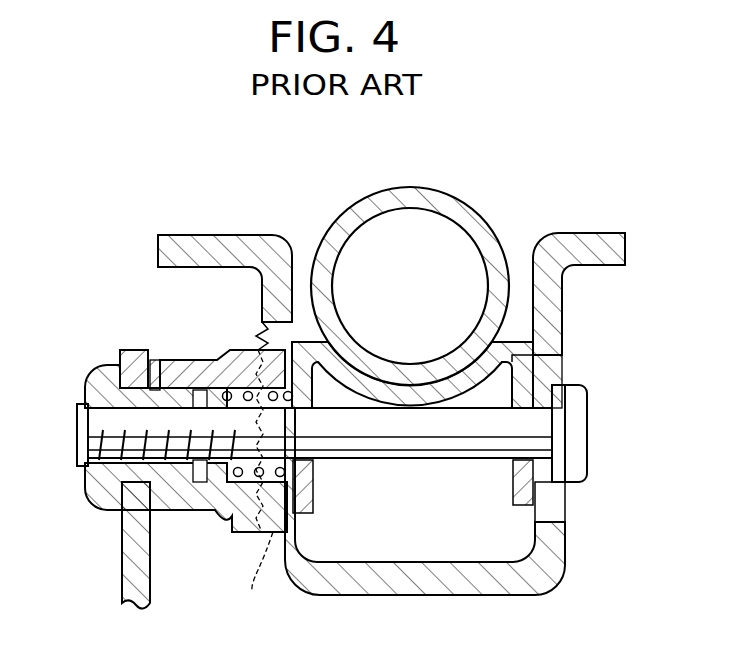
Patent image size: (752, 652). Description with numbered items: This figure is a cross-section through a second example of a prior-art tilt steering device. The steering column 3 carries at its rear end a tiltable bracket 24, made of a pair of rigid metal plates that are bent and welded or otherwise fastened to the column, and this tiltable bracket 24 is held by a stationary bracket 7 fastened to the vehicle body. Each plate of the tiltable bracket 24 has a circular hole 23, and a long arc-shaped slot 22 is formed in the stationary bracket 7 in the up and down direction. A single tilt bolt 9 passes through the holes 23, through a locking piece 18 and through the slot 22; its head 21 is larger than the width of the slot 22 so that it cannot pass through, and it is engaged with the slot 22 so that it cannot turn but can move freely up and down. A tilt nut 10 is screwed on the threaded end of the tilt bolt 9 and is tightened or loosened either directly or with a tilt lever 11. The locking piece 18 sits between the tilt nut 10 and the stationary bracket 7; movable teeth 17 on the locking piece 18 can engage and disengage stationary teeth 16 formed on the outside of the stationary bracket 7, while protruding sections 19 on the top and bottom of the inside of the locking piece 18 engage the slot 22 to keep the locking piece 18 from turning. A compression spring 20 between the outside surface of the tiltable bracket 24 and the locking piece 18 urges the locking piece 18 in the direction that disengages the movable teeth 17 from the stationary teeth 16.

The steering column 3 is at (476, 218).
The stationary bracket 7 is at (204, 242).
The tilt bolt 9 is at (415, 455).
The tilt nut 10 is at (92, 378).
The tilt lever 11 is at (125, 588).
The stationary teeth 16 is at (261, 530).
The movable teeth 17 is at (252, 576).
The locking piece 18 is at (180, 368).
The protruding sections 19 is at (295, 330).
The compression spring 20 is at (245, 493).
The head 21 is at (578, 432).
The slot 22 is at (264, 330).
The hole 23 is at (313, 458).
The tiltable bracket 24 is at (512, 350).